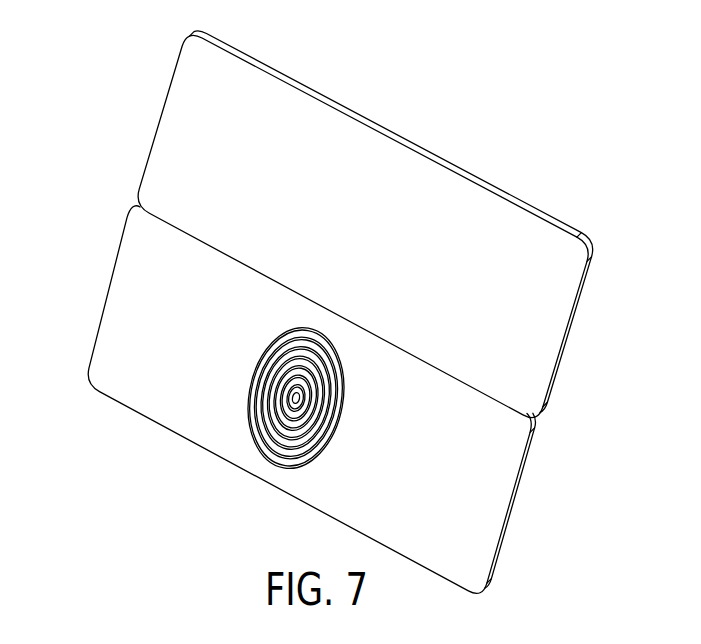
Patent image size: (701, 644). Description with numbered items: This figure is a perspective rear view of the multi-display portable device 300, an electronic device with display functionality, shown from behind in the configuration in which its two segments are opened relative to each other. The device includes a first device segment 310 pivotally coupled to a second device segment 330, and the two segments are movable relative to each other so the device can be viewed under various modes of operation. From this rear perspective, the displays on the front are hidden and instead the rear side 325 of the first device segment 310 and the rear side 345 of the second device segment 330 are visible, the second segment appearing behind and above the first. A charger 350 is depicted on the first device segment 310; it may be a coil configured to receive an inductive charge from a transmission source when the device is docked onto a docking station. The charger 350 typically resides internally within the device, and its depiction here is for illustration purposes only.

The multi-display portable device 300 is at (405, 130).
The first device segment 310 is at (102, 292).
The rear side 325 is at (113, 328).
The second device segment 330 is at (178, 62).
The rear side 345 is at (168, 105).
The charger 350 is at (268, 462).